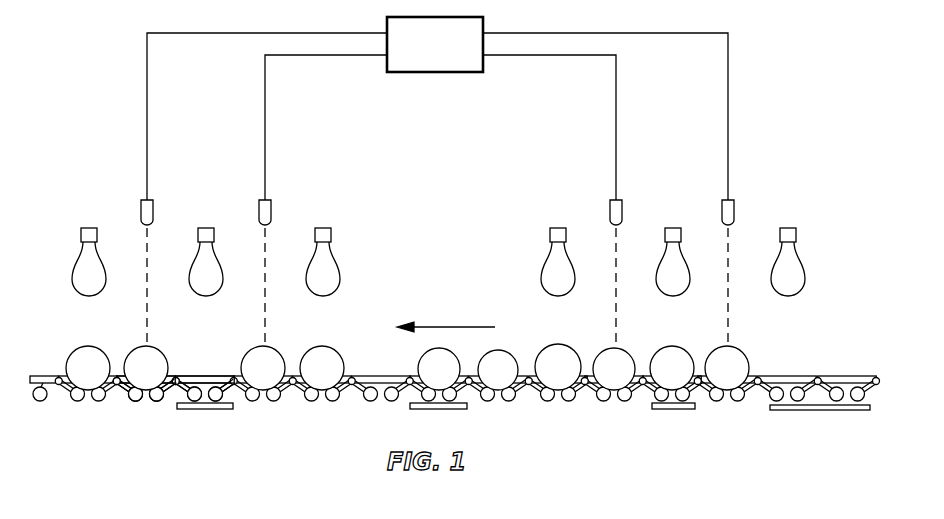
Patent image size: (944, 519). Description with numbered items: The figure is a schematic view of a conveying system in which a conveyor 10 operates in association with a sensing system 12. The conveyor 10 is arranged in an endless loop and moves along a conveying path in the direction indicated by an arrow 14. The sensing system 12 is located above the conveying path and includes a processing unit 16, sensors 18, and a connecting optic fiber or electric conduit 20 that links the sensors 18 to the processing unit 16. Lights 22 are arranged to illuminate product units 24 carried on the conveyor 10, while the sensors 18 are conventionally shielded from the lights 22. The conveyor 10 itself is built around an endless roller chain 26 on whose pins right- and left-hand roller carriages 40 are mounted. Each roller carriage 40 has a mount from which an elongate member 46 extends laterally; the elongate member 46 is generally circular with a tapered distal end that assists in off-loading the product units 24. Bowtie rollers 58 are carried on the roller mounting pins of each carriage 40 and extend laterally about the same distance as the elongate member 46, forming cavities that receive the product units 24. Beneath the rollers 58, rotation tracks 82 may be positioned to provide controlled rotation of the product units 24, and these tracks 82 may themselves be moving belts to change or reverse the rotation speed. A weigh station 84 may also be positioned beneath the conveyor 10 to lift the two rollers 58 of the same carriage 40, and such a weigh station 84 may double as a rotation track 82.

The conveyor 10 is at (266, 422).
The sensing system 12 is at (594, 31).
The arrow 14 is at (441, 326).
The processing unit 16 is at (483, 22).
The sensors 18 is at (271, 211).
The connecting optic fiber or electric conduit 20 is at (715, 33).
The lights 22 is at (549, 243).
The product units 24 is at (506, 357).
The endless roller chain 26 is at (363, 376).
The roller carriages 40 is at (240, 398).
The elongate member 46 is at (176, 377).
The bowtie rollers 58 is at (153, 400).
The rotation tracks 82 is at (195, 408).
The weigh station 84 is at (656, 405).